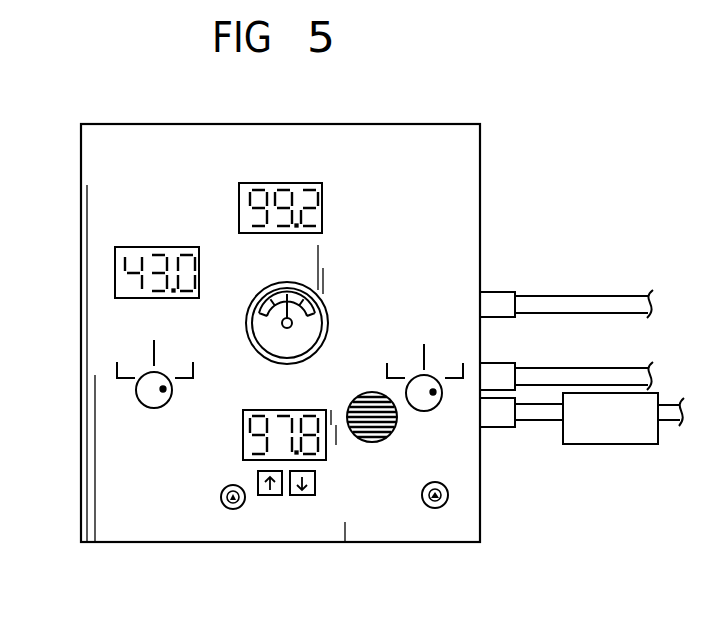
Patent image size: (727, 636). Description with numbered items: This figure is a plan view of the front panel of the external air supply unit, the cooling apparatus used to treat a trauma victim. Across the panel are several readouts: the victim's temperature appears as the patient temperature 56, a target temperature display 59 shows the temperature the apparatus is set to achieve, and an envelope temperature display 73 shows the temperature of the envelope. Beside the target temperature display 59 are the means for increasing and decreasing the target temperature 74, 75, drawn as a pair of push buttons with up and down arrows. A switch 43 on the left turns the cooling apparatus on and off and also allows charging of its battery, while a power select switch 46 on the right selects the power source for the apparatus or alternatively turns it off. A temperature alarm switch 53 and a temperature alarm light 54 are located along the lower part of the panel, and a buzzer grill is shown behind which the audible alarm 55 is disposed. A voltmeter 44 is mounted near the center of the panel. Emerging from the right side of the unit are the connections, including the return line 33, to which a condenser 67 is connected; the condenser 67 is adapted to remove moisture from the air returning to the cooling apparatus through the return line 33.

The patient temperature 56 is at (322, 186).
The envelope temperature display 73 is at (115, 273).
The voltmeter 44 is at (327, 300).
The switch 43 is at (139, 397).
The power select switch 46 is at (430, 408).
The audible alarm 55 is at (375, 443).
The target temperature display 59 is at (318, 462).
The means for increasing the target temperature 74 is at (270, 496).
The means for decreasing the target temperature 75 is at (306, 497).
The temperature alarm switch 53 is at (227, 506).
The temperature alarm light 54 is at (437, 509).
The return line 33 is at (537, 418).
The condenser 67 is at (608, 444).